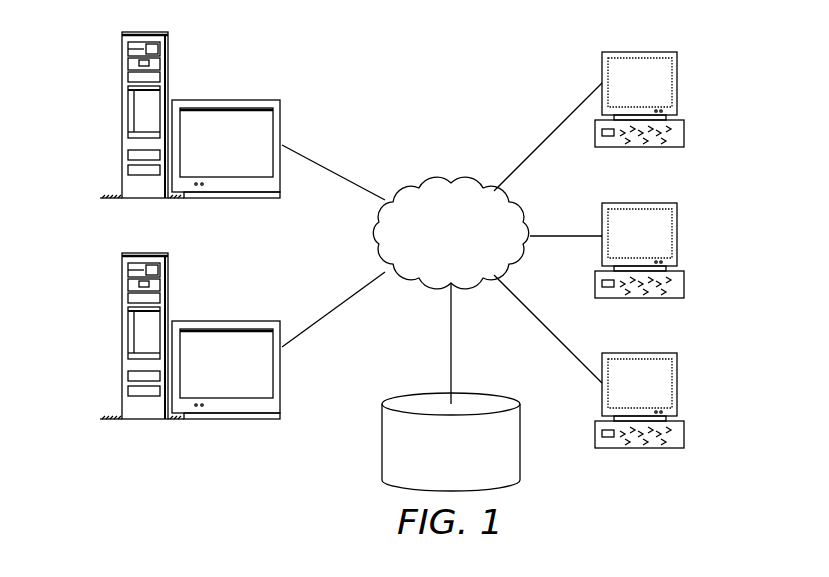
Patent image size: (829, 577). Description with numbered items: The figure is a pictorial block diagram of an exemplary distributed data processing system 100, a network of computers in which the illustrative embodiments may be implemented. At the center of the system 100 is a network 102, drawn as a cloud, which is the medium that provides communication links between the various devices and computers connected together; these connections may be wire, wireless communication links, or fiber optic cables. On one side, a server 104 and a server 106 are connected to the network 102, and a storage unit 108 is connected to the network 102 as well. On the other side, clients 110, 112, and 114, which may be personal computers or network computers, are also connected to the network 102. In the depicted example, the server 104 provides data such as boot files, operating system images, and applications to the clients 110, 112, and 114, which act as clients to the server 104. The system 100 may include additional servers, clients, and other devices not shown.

The distributed data processing system 100 is at (502, 63).
The network 102 is at (422, 183).
The server 104 is at (120, 117).
The server 106 is at (120, 343).
The storage unit 108 is at (380, 450).
The client 110 is at (682, 85).
The client 112 is at (682, 235).
The client 114 is at (682, 385).